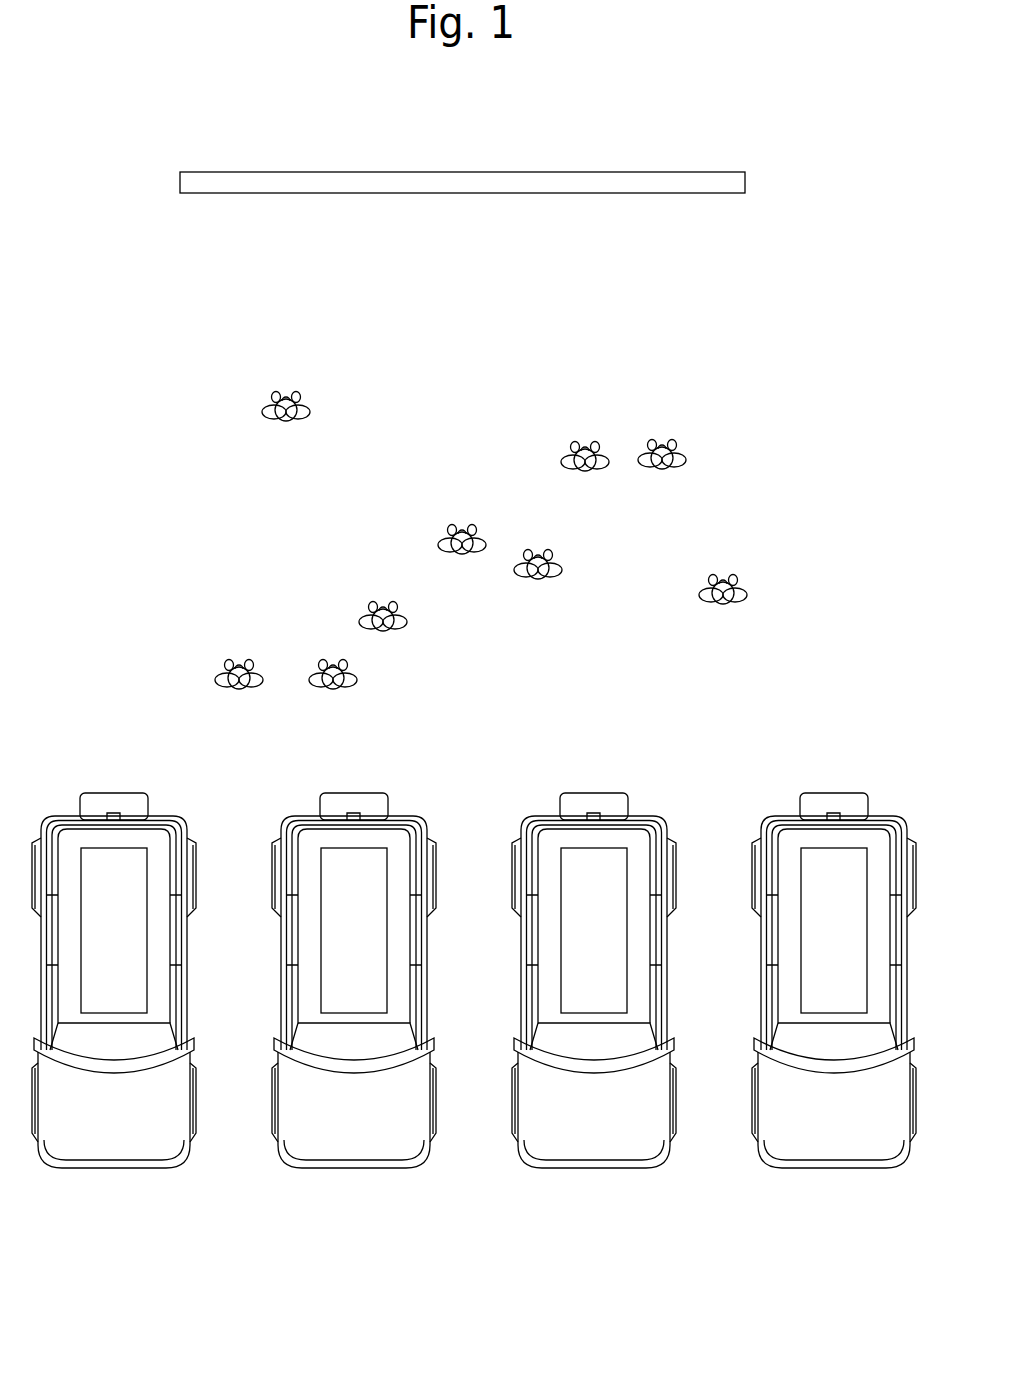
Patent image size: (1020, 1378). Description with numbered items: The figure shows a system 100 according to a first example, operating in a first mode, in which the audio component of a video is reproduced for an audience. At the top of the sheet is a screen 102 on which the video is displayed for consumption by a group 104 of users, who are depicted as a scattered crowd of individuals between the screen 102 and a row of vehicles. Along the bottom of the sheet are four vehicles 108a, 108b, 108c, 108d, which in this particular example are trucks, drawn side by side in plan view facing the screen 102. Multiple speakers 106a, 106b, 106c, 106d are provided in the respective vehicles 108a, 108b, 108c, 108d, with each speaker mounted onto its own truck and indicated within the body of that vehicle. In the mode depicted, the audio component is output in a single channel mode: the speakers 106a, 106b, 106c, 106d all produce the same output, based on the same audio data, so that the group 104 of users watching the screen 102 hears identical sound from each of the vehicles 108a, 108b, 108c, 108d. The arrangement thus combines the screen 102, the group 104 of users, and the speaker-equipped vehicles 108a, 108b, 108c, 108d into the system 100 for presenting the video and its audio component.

The system 100 is at (745, 121).
The screen 102 is at (665, 193).
The group of users 104 is at (735, 448).
The speaker 106a is at (122, 995).
The speaker 106b is at (354, 1034).
The speaker 106c is at (594, 1034).
The speaker 106d is at (834, 1034).
The vehicle 108a is at (107, 789).
The vehicle 108b is at (354, 942).
The vehicle 108c is at (594, 942).
The vehicle 108d is at (834, 942).